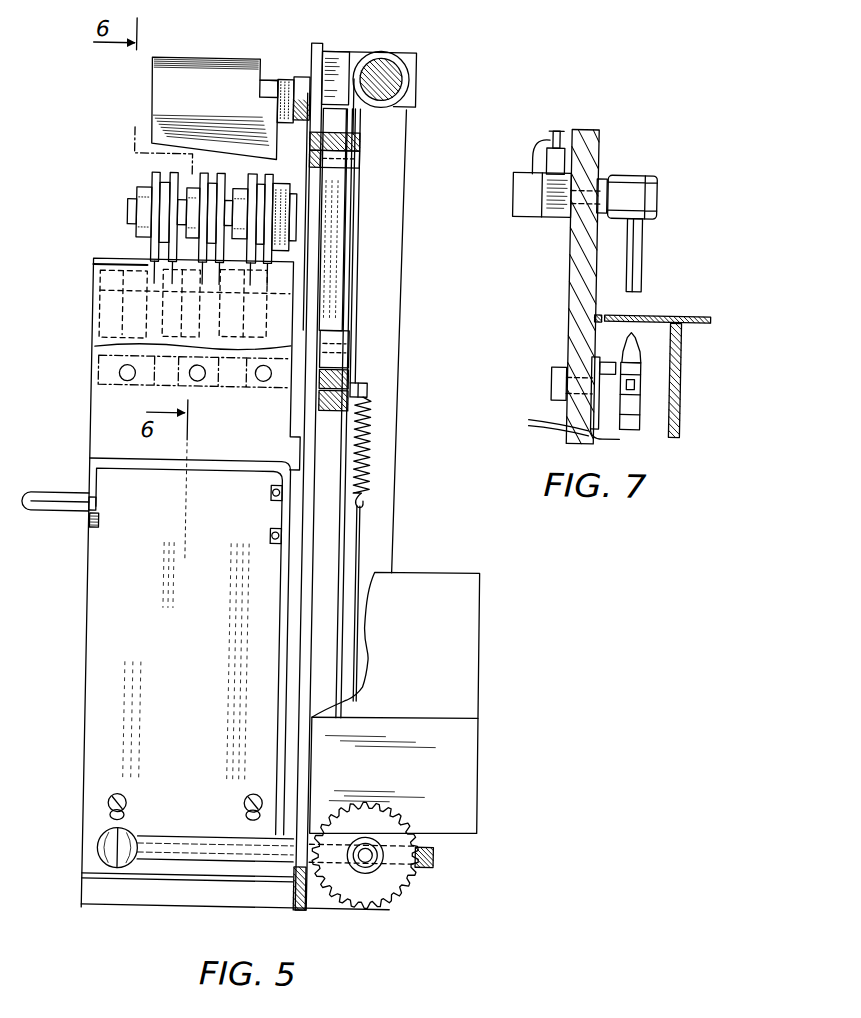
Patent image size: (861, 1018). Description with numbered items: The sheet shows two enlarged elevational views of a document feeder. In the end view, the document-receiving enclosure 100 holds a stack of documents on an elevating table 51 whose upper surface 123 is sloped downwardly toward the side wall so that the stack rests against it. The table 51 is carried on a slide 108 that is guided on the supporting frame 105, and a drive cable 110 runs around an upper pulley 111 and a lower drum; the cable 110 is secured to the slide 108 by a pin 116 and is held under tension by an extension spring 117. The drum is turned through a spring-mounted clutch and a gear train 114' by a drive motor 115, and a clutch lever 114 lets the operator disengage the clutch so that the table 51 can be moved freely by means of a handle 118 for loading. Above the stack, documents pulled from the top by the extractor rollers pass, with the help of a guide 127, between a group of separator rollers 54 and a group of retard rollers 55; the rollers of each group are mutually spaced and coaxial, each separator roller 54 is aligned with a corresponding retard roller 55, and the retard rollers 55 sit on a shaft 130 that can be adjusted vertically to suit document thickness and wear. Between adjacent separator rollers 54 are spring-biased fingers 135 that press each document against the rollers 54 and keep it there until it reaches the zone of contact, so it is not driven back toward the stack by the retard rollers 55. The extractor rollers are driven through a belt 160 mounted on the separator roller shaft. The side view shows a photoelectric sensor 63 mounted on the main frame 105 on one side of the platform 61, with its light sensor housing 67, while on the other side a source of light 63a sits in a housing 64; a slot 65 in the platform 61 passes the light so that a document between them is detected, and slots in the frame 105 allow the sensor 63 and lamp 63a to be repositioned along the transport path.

In FIG. 5, the elevating table 51 is at (218, 478).
In FIG. 5, the separator rollers 54 is at (131, 185).
In FIG. 5, the retard rollers 55 is at (86, 272).
In FIG. 5, the document-receiving enclosure 100 is at (106, 425).
In FIG. 5, the slide 108 is at (331, 330).
In FIG. 5, the drive cable 110 is at (402, 134).
In FIG. 5, the upper pulley 111 is at (380, 49).
In FIG. 5, the clutch lever 114 is at (153, 858).
In FIG. 5, the gear train 114' is at (393, 865).
In FIG. 5, the drive motor 115 is at (459, 620).
In FIG. 5, the pin 116 is at (358, 384).
In FIG. 5, the extension spring 117 is at (370, 447).
In FIG. 5, the handle 118 is at (40, 500).
In FIG. 5, the upper surface 123 is at (187, 629).
In FIG. 5, the guide 127 is at (91, 316).
In FIG. 5, the shaft 130 is at (128, 279).
In FIG. 5, the spring-biased fingers 135 is at (258, 270).
In FIG. 5, the belt 160 is at (266, 157).
In FIG. 7, the platform 61 is at (677, 358).
In FIG. 7, the photoelectric sensor 63 is at (637, 173).
In FIG. 7, the source of light 63a is at (652, 343).
In FIG. 7, the housing 64 is at (685, 406).
In FIG. 7, the slot 65 is at (636, 318).
In FIG. 7, the light sensor housing 67 is at (642, 266).
In FIG. 7, the main frame 105 is at (569, 260).